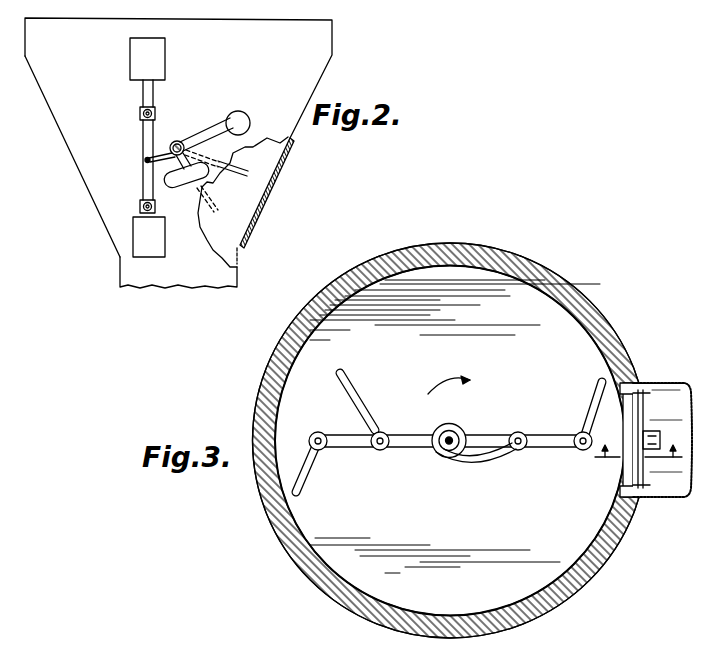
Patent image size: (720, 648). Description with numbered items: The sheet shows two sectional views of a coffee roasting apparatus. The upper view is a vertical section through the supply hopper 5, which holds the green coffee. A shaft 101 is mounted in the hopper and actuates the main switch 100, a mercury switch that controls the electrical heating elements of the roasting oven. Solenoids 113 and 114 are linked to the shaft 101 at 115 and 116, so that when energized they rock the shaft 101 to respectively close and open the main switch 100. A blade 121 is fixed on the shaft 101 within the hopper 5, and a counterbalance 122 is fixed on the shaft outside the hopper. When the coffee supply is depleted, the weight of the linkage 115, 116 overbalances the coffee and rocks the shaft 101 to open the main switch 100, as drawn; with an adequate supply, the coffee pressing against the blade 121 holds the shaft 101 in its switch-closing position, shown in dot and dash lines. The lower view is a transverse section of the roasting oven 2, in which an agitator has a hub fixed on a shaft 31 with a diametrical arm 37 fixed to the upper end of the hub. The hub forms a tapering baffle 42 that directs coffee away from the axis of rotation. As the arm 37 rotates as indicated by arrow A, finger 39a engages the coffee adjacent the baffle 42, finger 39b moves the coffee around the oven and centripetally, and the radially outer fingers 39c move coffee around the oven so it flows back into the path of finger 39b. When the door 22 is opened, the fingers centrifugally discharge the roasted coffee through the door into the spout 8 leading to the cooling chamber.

In FIG. 2, the supply hopper 5 is at (318, 56).
In FIG. 3, the supply hopper 5 is at (638, 462).
In FIG. 2, the solenoid 113 is at (155, 68).
In FIG. 2, the link 115 is at (151, 128).
In FIG. 2, the link 116 is at (143, 187).
In FIG. 2, the solenoid 114 is at (140, 240).
In FIG. 2, the shaft 101 is at (182, 143).
In FIG. 2, the counterbalance 122 is at (243, 121).
In FIG. 2, the main switch 100 is at (182, 177).
In FIG. 2, the blade 121 is at (243, 172).
In FIG. 3, the roasting oven 2 is at (592, 325).
In FIG. 3, the door 22 is at (648, 383).
In FIG. 3, the spout 8 is at (663, 490).
In FIG. 3, the diametrical arm 37 is at (420, 449).
In FIG. 3, the shaft 31 is at (447, 455).
In FIG. 3, the tapering baffle 42 is at (462, 431).
In FIG. 3, the finger 39a is at (478, 464).
In FIG. 3, the finger 39b is at (362, 391).
In FIG. 3, the radially outer fingers 39c is at (310, 483).
In FIG. 3, the arrow A is at (449, 381).